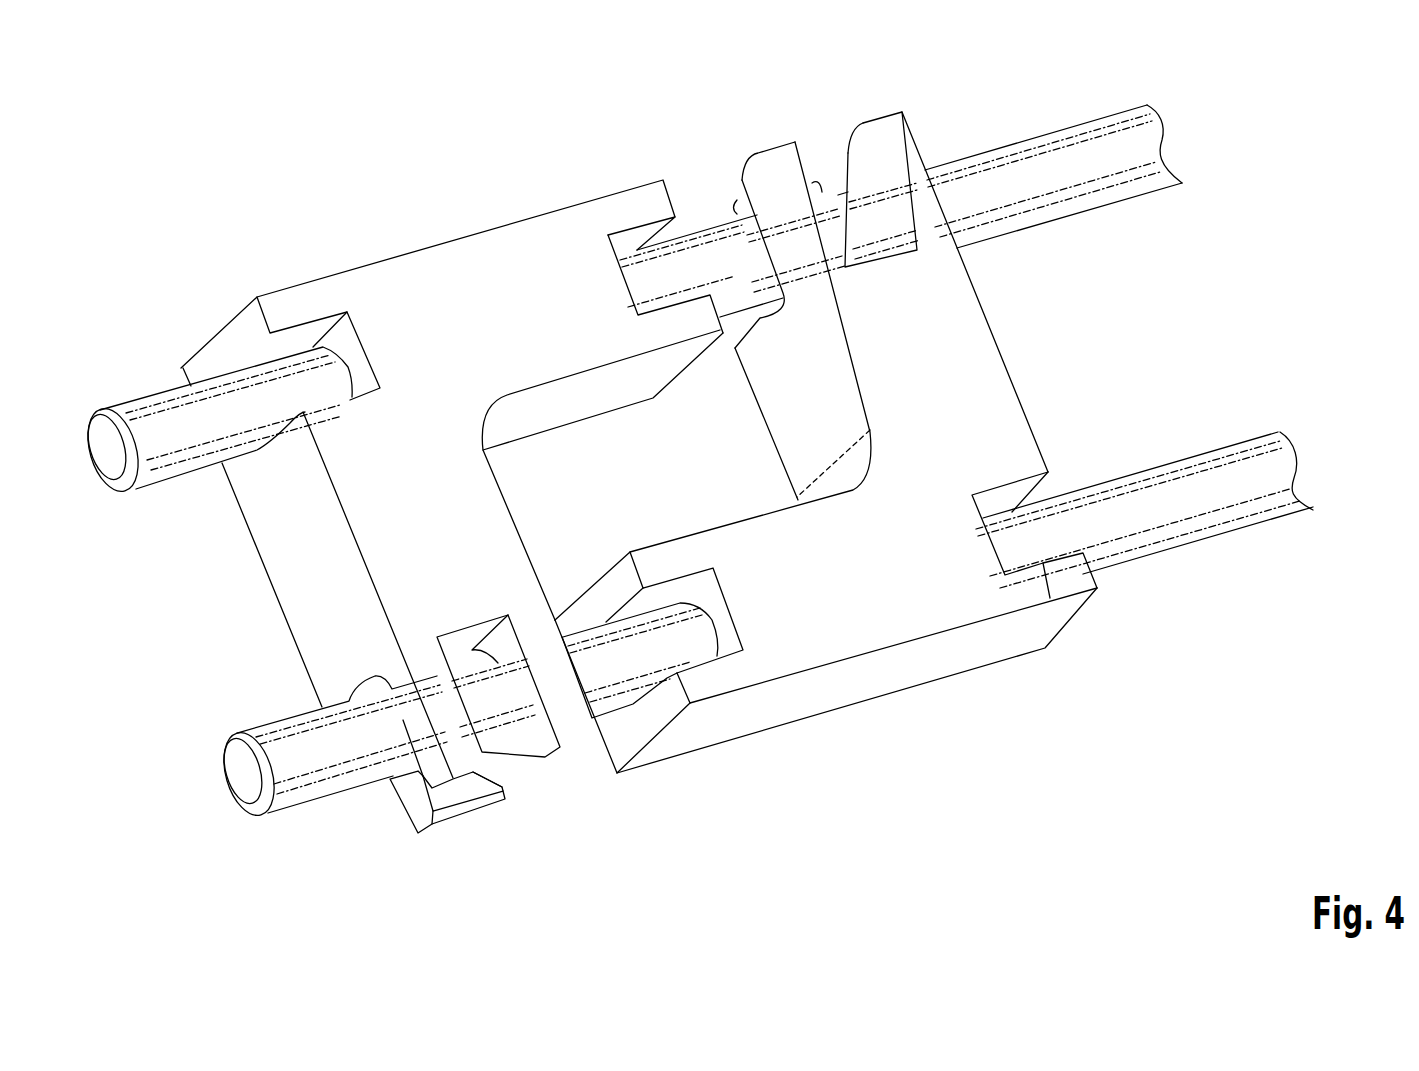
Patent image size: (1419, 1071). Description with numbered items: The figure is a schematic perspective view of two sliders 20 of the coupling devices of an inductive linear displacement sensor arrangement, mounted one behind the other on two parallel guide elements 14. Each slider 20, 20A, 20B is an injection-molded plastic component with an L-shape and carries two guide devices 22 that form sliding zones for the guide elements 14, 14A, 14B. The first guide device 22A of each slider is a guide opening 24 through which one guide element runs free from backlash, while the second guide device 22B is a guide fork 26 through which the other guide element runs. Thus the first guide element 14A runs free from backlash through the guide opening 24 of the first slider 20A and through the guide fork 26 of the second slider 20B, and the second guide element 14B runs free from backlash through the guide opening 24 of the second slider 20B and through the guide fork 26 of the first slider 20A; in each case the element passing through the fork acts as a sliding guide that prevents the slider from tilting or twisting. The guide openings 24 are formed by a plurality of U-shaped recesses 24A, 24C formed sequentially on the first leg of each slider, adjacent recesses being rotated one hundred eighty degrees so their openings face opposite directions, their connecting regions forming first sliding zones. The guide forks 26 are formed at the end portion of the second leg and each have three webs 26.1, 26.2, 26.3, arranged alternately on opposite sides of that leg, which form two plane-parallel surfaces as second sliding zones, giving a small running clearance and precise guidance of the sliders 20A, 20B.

The guide element 14 is at (696, 463).
The first guide element 14A is at (1220, 513).
The second guide element 14B is at (1143, 143).
The slider 20 is at (633, 445).
The first slider 20A is at (968, 345).
The second slider 20B is at (300, 583).
The guide device 22 is at (644, 481).
The first guide device 22A is at (644, 463).
The second guide device 22B is at (655, 481).
The guide opening 24 is at (670, 463).
The U-shaped recess 24A is at (630, 243).
The U-shaped recess 24C is at (303, 337).
The guide fork 26 is at (655, 471).
The web 26.1 is at (897, 128).
The web 26.2 is at (734, 208).
The web 26.3 is at (777, 152).